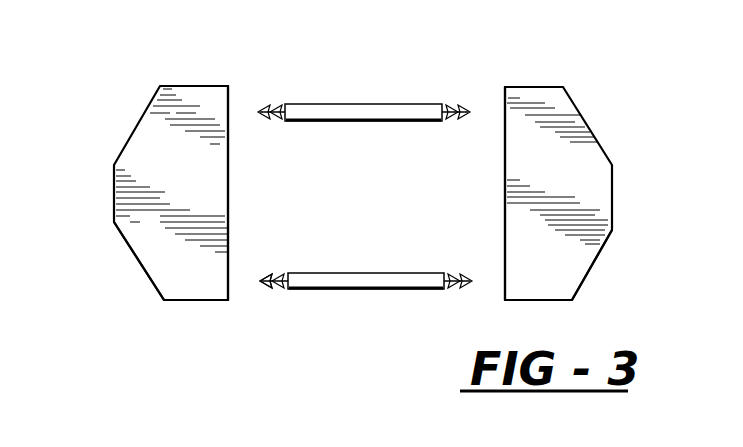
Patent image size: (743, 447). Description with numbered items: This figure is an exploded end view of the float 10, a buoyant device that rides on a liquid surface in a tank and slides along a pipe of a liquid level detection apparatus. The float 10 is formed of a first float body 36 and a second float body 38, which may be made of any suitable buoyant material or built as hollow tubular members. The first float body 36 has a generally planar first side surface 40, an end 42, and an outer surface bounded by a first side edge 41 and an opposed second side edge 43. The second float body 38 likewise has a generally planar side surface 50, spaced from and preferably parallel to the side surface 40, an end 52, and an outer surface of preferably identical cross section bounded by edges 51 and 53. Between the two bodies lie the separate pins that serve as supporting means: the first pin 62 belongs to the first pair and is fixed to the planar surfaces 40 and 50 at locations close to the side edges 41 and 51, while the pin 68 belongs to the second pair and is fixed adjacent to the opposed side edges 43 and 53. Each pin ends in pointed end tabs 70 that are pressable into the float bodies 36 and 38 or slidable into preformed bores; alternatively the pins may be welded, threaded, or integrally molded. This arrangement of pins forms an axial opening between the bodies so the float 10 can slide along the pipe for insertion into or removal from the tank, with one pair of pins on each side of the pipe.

The float 10 is at (558, 41).
The first float body 36 is at (574, 186).
The second float body 38 is at (117, 150).
The first side surface 40 is at (504, 190).
The first side edge 41 is at (513, 68).
The first end 42 is at (575, 250).
The second side edge 43 is at (545, 302).
The side surface 50 is at (229, 172).
The edge 51 is at (191, 86).
The first end 52 is at (159, 260).
The edge 53 is at (180, 302).
The first pin 62 is at (333, 112).
The pin 68 is at (423, 280).
The pointed end tabs 70 is at (268, 288).